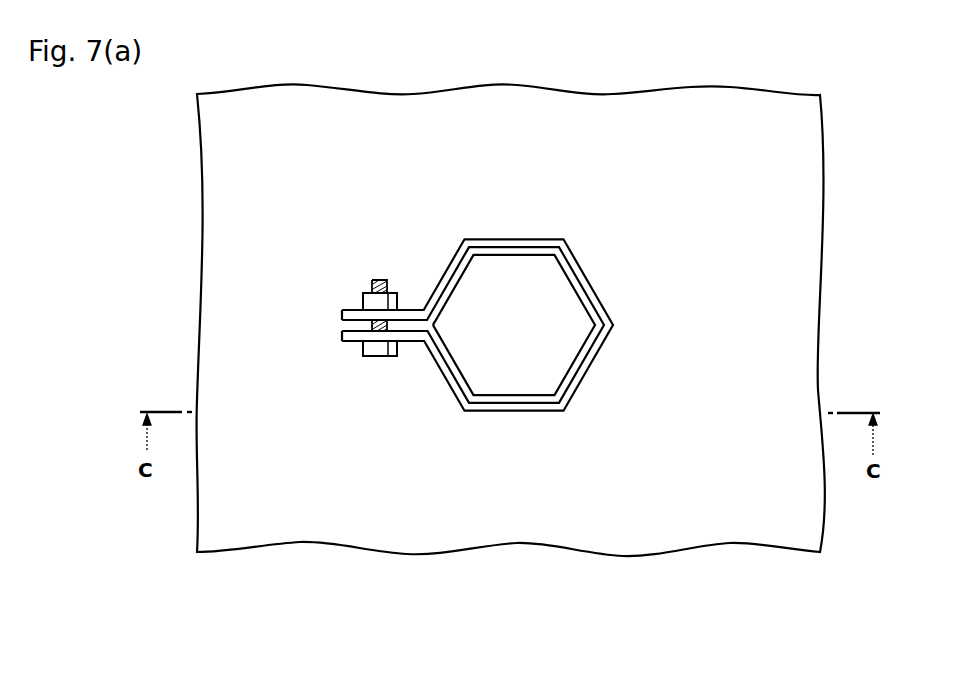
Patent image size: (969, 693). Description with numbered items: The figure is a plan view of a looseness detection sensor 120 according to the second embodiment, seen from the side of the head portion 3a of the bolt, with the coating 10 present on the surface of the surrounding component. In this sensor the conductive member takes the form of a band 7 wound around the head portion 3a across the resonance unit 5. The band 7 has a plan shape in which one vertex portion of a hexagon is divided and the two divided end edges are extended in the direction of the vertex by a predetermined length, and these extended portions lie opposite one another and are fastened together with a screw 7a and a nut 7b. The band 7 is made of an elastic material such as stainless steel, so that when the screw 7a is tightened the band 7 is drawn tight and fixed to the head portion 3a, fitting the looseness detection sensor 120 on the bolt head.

The coating 10 is at (683, 118).
The looseness detection sensor 120 is at (470, 308).
The resonance unit 5 is at (577, 263).
The head portion 3a is at (570, 340).
The band 7 is at (457, 390).
The screw 7a is at (362, 348).
The nut 7b is at (362, 299).